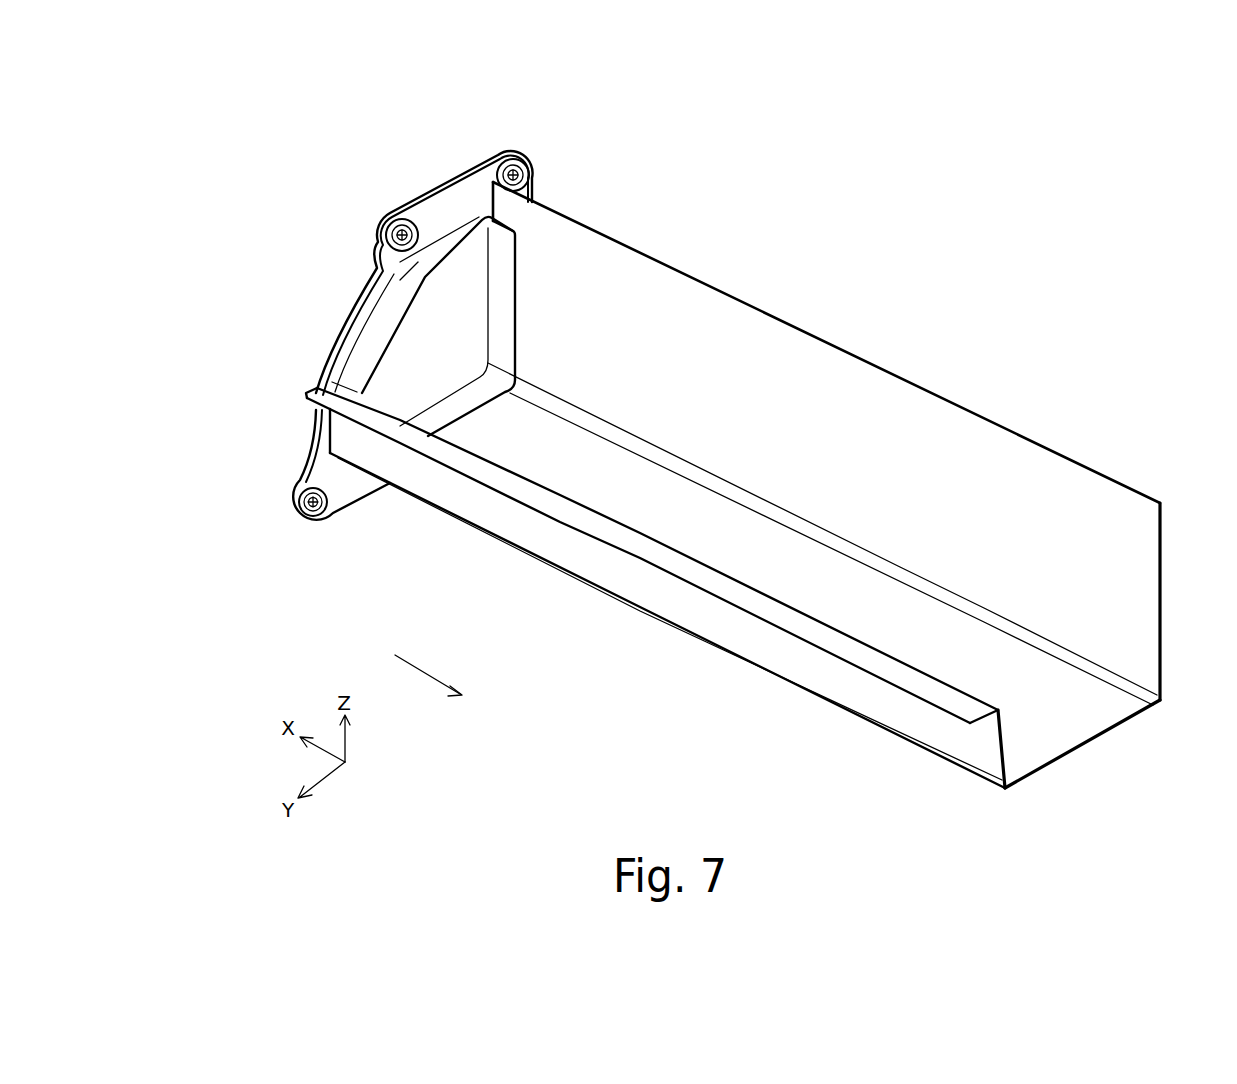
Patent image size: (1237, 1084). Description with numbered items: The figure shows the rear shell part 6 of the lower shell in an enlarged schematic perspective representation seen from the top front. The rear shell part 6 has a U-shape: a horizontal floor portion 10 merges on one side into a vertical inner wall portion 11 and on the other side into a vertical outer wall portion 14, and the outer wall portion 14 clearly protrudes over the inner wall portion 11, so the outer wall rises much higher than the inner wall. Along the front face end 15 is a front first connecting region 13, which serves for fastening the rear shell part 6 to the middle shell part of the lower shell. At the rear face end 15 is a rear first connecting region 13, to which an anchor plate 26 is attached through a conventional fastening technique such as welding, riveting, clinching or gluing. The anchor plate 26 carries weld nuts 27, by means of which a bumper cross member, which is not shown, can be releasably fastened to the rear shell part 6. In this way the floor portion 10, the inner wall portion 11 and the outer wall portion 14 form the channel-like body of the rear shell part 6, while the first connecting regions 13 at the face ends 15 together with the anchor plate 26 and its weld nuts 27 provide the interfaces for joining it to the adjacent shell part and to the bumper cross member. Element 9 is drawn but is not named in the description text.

The rear shell part 6 is at (697, 465).
The front flange 9 is at (735, 595).
The horizontal floor portion 10 is at (878, 605).
The vertical inner wall portion 11 is at (577, 553).
The first connecting region 13 is at (472, 429).
The vertical outer wall portion 14 is at (800, 355).
The face end 15 is at (420, 405).
The anchor plate 26 is at (457, 205).
The weld nuts 27 is at (382, 243).